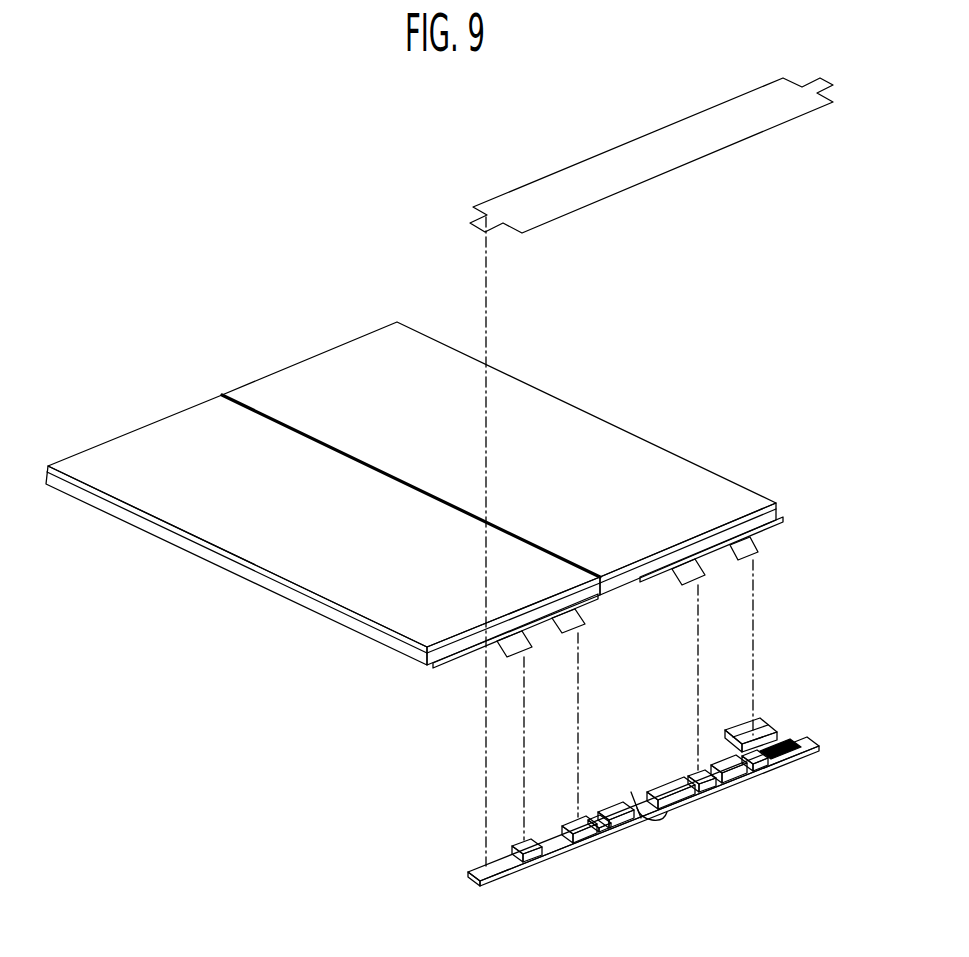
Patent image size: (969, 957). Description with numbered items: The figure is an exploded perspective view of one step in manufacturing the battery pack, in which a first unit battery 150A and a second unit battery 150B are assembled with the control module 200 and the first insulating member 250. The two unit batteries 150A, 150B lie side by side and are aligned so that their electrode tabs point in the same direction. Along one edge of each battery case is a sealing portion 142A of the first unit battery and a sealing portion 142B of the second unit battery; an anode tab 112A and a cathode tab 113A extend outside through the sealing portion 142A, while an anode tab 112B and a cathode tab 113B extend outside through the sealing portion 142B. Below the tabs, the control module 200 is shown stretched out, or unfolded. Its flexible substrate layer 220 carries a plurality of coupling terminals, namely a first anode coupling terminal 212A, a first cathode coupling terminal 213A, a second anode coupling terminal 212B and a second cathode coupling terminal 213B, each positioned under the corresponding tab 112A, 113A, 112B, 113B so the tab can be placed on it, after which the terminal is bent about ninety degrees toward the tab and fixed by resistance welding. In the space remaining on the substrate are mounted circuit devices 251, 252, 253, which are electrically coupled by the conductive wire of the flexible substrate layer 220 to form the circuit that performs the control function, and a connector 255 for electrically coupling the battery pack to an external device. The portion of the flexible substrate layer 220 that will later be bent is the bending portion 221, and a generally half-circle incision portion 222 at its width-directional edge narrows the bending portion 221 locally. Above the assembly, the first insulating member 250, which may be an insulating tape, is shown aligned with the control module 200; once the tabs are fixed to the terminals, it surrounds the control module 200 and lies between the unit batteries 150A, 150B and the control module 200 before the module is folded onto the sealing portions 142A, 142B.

The first unit battery 150A is at (128, 412).
The second unit battery 150B is at (298, 344).
The sealing portion 142A is at (413, 656).
The sealing portion 142B is at (780, 520).
The anode tab 112A is at (572, 620).
The cathode tab 113A is at (513, 650).
The anode tab 112B is at (755, 550).
The cathode tab 113B is at (695, 570).
The first insulating member 250 is at (703, 126).
The control module 200 is at (662, 787).
The flexible substrate layer 220 is at (643, 805).
The bending portion 221 is at (657, 822).
The incision portion 222 is at (640, 792).
The circuit device 251 is at (722, 757).
The circuit device 252 is at (670, 785).
The circuit device 253 is at (598, 818).
The connector 255 is at (790, 722).
The first anode coupling terminal 212A is at (583, 833).
The first cathode coupling terminal 213A is at (522, 852).
The second anode coupling terminal 212B is at (757, 763).
The second cathode coupling terminal 213B is at (705, 787).